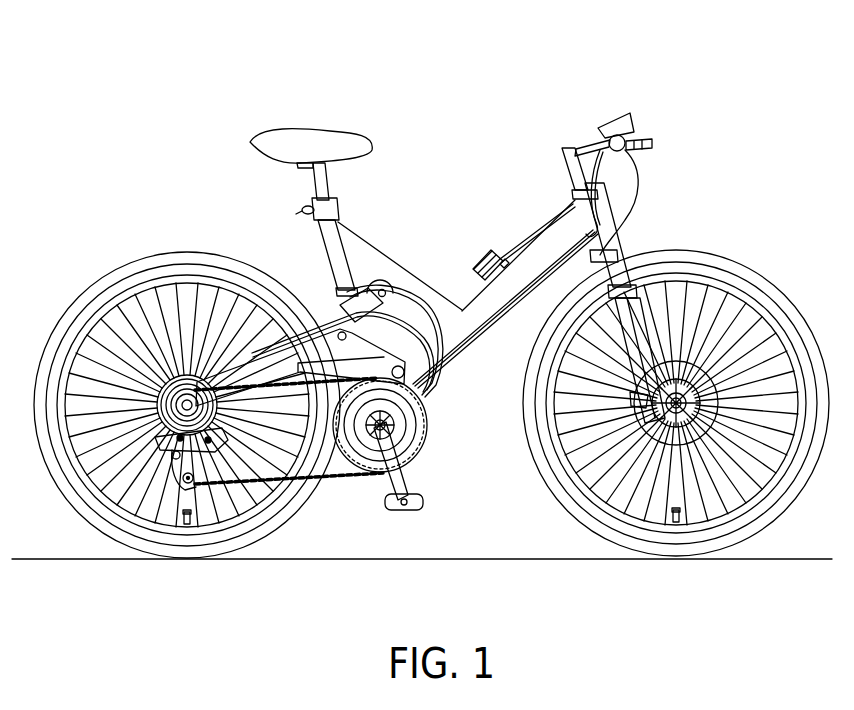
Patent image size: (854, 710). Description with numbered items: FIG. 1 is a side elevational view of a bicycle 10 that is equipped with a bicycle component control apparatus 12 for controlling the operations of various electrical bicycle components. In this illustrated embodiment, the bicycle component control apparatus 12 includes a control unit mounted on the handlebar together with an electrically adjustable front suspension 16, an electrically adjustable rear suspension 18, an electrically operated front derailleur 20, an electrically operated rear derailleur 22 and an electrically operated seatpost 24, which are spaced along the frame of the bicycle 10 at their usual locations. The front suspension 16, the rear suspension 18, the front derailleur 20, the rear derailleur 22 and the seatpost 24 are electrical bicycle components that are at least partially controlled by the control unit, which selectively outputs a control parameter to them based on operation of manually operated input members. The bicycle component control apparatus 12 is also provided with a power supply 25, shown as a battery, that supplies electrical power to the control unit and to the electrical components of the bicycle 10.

The bicycle 10 is at (414, 112).
The bicycle component control apparatus 12 is at (645, 102).
The electrically adjustable front suspension 16 is at (612, 231).
The electrically adjustable rear suspension 18 is at (339, 309).
The electrically operated front derailleur 20 is at (388, 369).
The electrically operated rear derailleur 22 is at (232, 458).
The electrically operated seatpost 24 is at (325, 178).
The power supply 25 is at (483, 249).